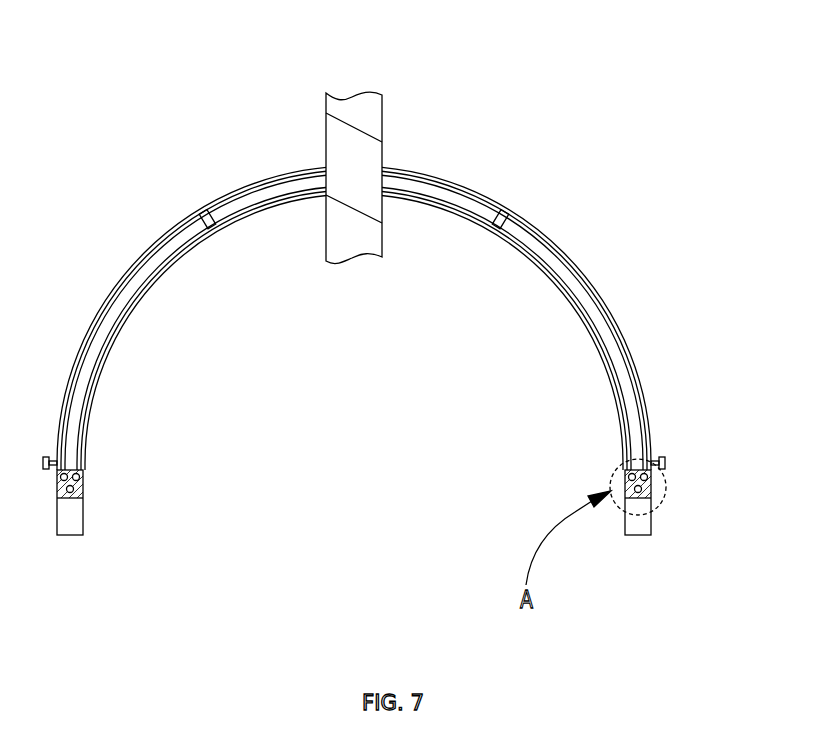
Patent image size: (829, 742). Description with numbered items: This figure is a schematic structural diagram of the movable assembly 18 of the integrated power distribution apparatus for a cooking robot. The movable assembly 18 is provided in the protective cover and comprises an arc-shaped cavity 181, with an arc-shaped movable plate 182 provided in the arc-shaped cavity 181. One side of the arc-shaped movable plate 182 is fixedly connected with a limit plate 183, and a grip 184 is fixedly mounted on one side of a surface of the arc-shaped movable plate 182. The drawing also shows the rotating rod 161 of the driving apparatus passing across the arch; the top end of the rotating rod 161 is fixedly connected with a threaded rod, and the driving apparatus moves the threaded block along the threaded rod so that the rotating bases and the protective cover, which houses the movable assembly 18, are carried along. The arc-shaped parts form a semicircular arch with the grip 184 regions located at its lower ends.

The movable assembly 18 is at (411, 323).
The rotating rod 161 is at (337, 155).
The arc-shaped cavity 181 is at (498, 210).
The arc-shaped movable plate 182 is at (633, 371).
The limit plate 183 is at (524, 230).
The grip 184 is at (386, 478).